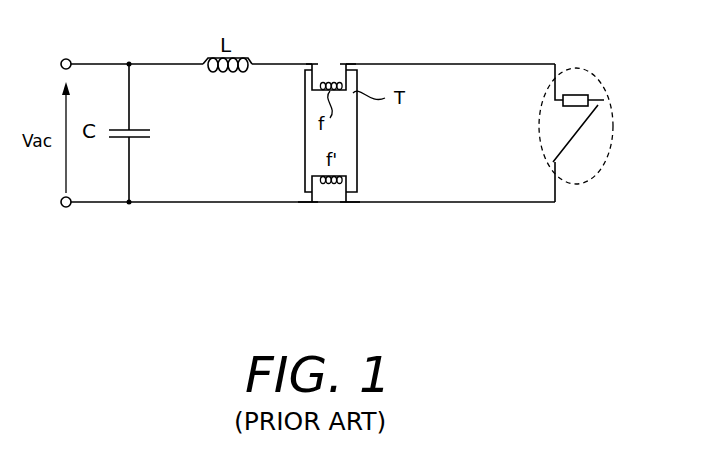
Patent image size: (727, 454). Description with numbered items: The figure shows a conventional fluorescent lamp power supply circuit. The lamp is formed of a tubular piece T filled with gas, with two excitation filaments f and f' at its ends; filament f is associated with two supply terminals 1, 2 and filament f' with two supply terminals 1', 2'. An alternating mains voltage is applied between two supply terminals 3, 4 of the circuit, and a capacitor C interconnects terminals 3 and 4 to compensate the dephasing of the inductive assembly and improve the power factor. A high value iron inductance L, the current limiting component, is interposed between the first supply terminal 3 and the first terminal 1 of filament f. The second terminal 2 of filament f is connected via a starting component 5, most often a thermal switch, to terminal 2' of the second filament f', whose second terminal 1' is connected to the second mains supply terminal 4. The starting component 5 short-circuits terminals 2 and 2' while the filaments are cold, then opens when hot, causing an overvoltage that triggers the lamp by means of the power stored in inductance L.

The supply terminal 1 is at (309, 37).
The supply terminal 2 is at (347, 37).
The supply terminal 1' is at (305, 235).
The supply terminal 2' is at (350, 235).
The a.c. supply terminal 3 is at (66, 59).
The mains supply terminal 4 is at (66, 207).
The starting component 5 is at (590, 72).